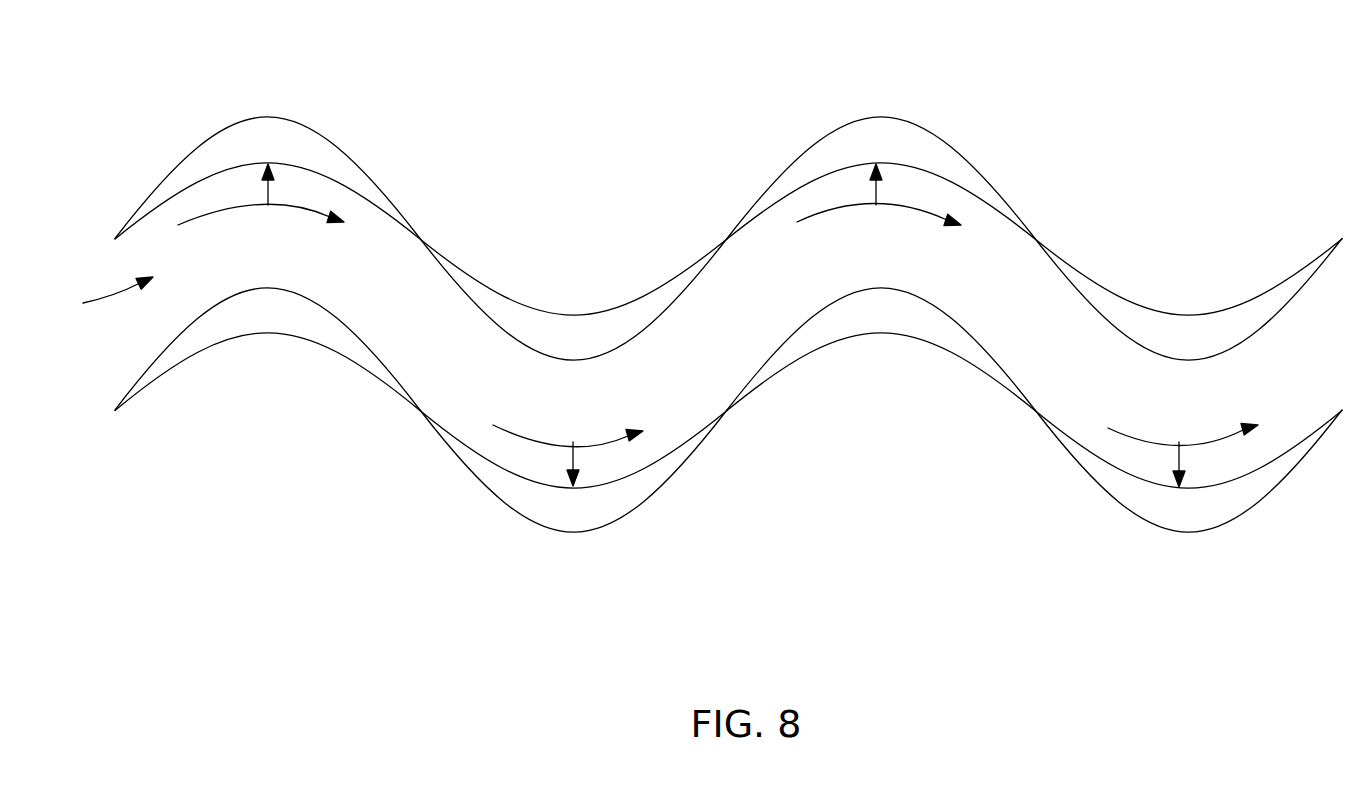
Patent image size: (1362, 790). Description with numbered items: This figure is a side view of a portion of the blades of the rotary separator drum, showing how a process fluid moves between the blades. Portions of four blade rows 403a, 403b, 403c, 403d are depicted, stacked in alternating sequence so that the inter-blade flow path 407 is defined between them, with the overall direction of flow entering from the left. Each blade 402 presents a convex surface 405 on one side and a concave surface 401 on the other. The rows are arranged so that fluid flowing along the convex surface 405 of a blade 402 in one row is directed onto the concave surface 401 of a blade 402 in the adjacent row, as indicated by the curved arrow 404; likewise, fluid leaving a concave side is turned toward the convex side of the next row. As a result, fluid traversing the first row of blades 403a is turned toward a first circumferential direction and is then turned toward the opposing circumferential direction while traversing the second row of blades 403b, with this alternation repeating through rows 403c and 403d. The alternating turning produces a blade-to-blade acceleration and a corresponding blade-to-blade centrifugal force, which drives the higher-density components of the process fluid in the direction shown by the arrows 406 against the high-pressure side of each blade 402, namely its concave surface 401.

The concave surface 401 is at (217, 182).
The blade 402 is at (860, 135).
The first row of blades 403a is at (272, 375).
The second row of blades 403b is at (568, 577).
The blade row 403c is at (874, 382).
The blade row 403d is at (1182, 574).
The arrow 404 is at (235, 208).
The convex surface 405 is at (320, 132).
The arrows 406 is at (268, 194).
The inter-blade flow path 407 is at (93, 297).